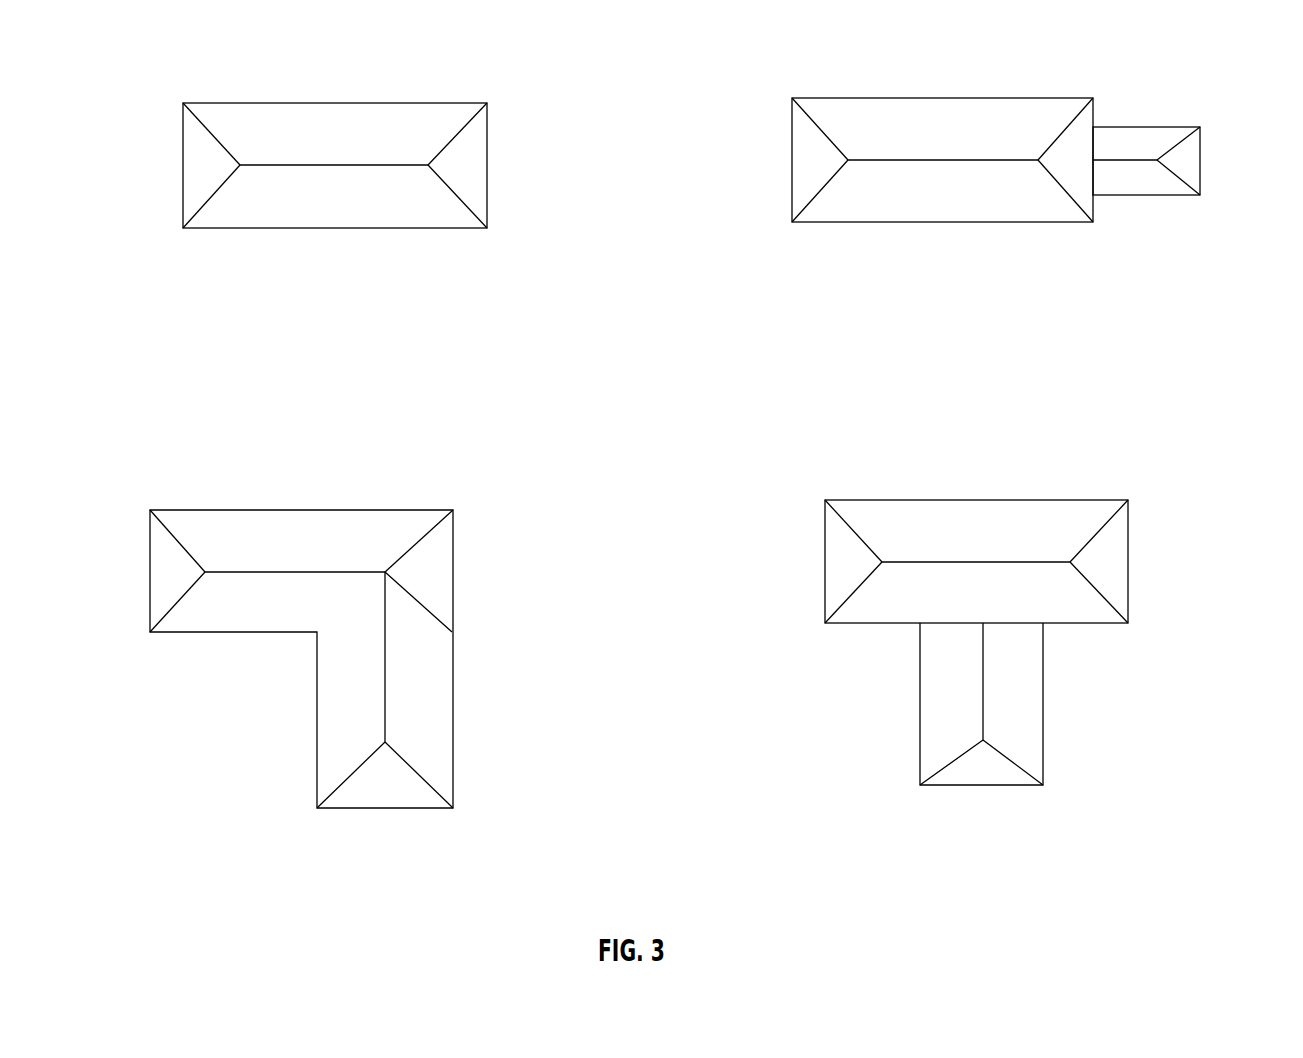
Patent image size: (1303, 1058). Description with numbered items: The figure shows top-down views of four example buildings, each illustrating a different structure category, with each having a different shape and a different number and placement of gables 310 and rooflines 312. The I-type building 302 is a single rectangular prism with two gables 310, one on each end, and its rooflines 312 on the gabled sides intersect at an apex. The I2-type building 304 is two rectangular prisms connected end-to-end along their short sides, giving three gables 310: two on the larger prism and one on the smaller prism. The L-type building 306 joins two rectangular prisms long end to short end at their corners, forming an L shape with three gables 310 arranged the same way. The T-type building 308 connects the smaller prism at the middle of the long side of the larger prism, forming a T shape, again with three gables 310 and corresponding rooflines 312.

The I-type building structure 302 is at (370, 85).
The I2-type building structure 304 is at (995, 92).
The L-type building structure 306 is at (342, 498).
The T-type building structure 308 is at (1027, 488).
The gables 310 is at (451, 206).
The rooflines 312 is at (620, 72).